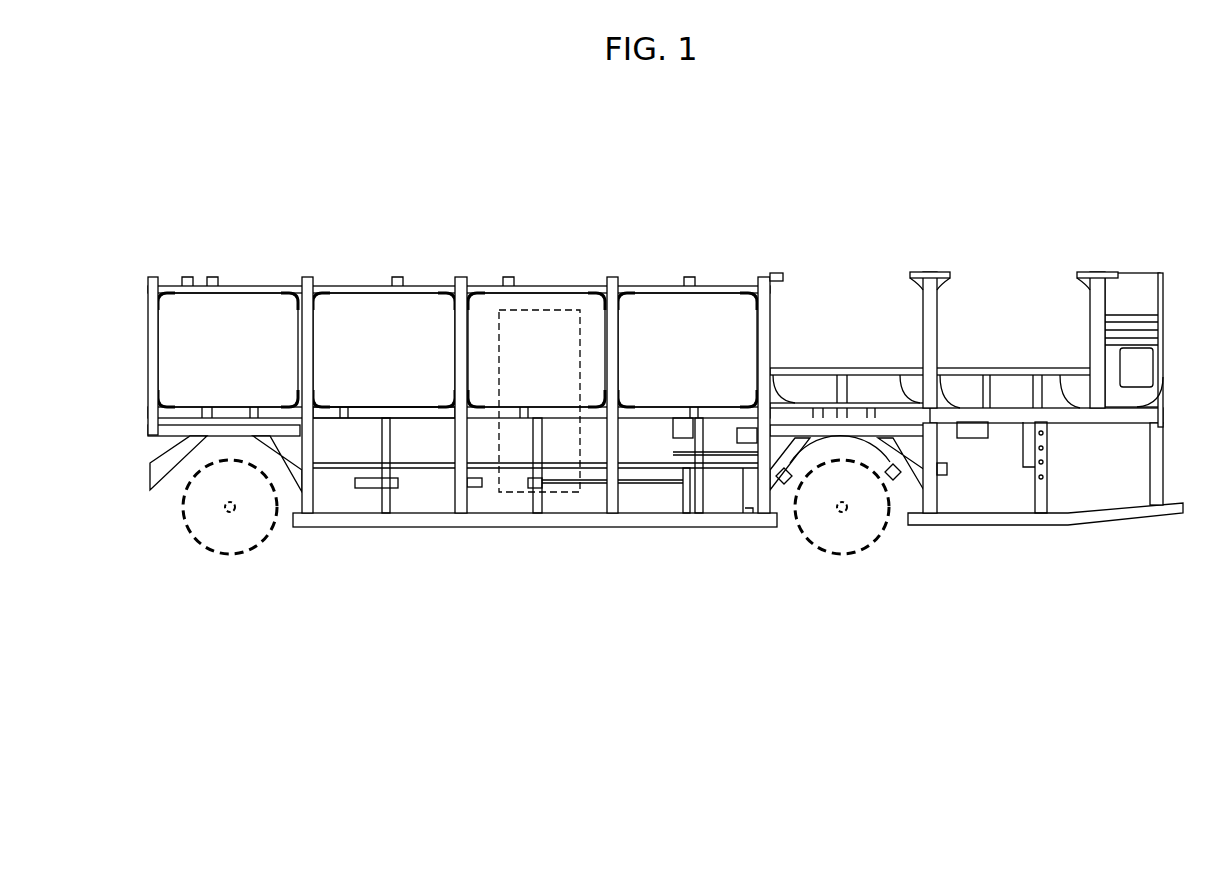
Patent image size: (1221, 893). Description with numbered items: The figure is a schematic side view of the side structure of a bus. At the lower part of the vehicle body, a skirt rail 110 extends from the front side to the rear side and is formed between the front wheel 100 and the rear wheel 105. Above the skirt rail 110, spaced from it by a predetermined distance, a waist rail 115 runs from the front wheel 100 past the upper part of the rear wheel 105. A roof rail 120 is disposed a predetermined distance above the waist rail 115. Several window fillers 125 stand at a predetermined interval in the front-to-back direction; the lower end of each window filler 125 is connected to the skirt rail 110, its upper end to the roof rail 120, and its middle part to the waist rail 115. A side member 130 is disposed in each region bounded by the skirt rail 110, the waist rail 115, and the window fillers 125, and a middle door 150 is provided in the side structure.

The front wheel 100 is at (195, 548).
The rear wheel 105 is at (800, 533).
The skirt rail 110 is at (560, 528).
The waist rail 115 is at (345, 408).
The roof rail 120 is at (240, 290).
The window filler 125 is at (308, 277).
The side member 130 is at (528, 497).
The middle door 150 is at (543, 310).